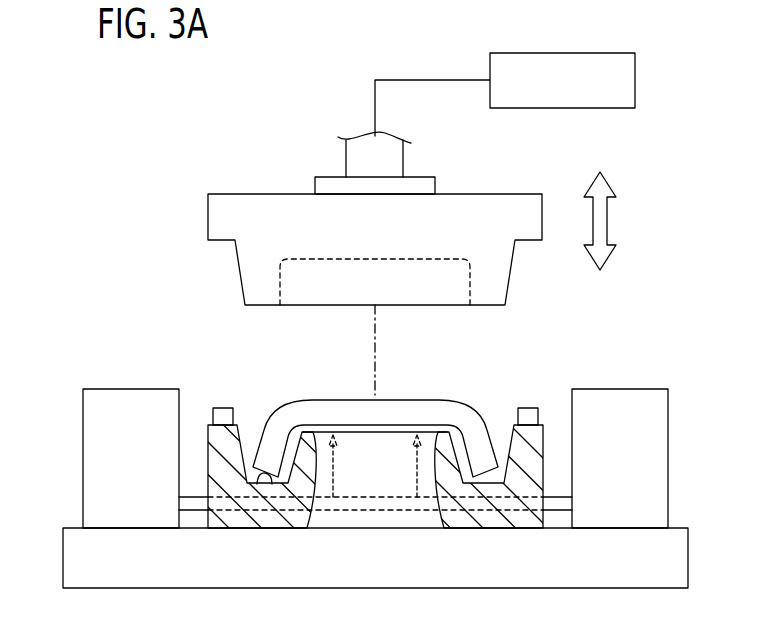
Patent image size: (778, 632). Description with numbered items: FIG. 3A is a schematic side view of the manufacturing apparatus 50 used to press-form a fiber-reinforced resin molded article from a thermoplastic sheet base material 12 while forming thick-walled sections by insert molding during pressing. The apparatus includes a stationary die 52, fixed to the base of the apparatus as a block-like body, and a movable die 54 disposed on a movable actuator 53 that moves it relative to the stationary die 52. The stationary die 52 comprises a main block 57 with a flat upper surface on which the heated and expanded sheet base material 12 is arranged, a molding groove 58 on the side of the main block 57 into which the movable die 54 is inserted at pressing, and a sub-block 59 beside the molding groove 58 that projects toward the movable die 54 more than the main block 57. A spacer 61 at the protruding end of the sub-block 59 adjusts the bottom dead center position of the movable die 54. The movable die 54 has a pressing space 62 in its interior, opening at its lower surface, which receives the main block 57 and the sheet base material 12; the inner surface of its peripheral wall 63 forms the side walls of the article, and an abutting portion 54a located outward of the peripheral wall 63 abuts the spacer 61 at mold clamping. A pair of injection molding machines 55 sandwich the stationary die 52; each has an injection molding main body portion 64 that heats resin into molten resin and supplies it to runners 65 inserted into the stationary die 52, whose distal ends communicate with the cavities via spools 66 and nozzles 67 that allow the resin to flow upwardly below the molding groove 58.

The sheet base material 12 is at (397, 408).
The manufacturing apparatus 50 is at (152, 93).
The stationary die 52 is at (497, 520).
The movable actuator 53 is at (635, 80).
The movable die 54 is at (288, 203).
The abutting portion 54a is at (513, 205).
The injection molding machine 55 is at (375, 431).
The main block 57 is at (363, 442).
The molding groove 58 is at (268, 478).
The sub-block 59 is at (530, 465).
The spacer 61 is at (222, 413).
The pressing space 62 is at (421, 276).
The peripheral wall 63 is at (488, 306).
The injection molding main body portion 64 is at (105, 445).
The runner 65 is at (197, 503).
The spool 66 is at (363, 503).
The nozzle 67 is at (340, 462).